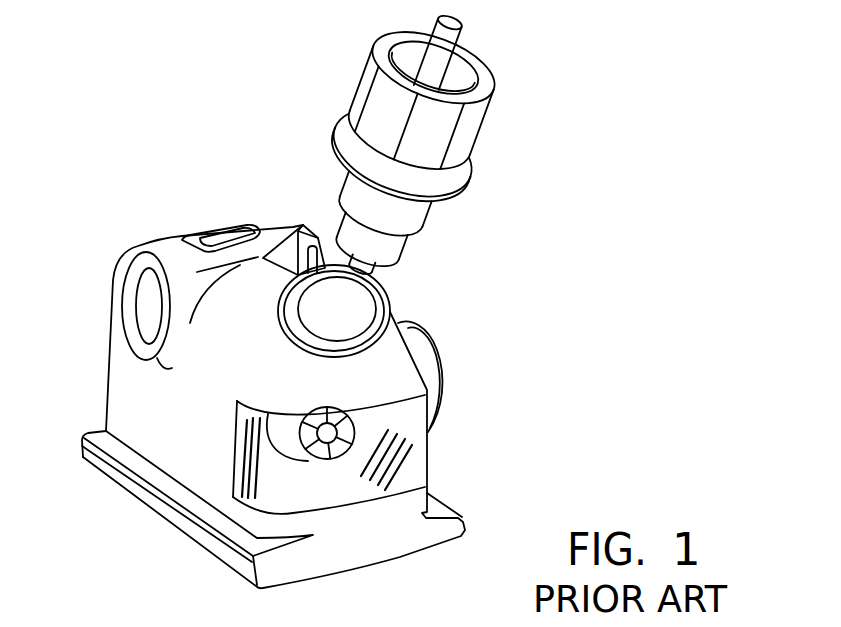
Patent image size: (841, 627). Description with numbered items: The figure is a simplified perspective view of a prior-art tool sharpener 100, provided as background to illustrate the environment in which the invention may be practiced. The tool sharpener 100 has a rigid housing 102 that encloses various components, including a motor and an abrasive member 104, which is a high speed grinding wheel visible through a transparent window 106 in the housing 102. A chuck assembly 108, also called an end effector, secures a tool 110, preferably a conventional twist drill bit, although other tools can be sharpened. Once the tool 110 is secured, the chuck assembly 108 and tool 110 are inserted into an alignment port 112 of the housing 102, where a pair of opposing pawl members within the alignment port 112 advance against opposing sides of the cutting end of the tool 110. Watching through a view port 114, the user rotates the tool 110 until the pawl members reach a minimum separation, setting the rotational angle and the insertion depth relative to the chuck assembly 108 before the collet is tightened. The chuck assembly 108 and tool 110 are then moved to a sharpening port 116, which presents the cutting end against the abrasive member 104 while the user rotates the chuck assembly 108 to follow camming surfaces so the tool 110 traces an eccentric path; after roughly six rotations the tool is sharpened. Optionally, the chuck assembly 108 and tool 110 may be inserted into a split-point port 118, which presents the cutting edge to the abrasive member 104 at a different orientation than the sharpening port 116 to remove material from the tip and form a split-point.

The tool sharpener 100 is at (62, 191).
The rigid housing 102 is at (133, 402).
The abrasive member 104 is at (328, 426).
The transparent window 106 is at (330, 500).
The chuck assembly 108 is at (353, 103).
The tool 110 is at (460, 36).
The alignment port 112 is at (127, 308).
The view port 114 is at (225, 221).
The sharpening port 116 is at (385, 297).
The split-point port 118 is at (452, 392).